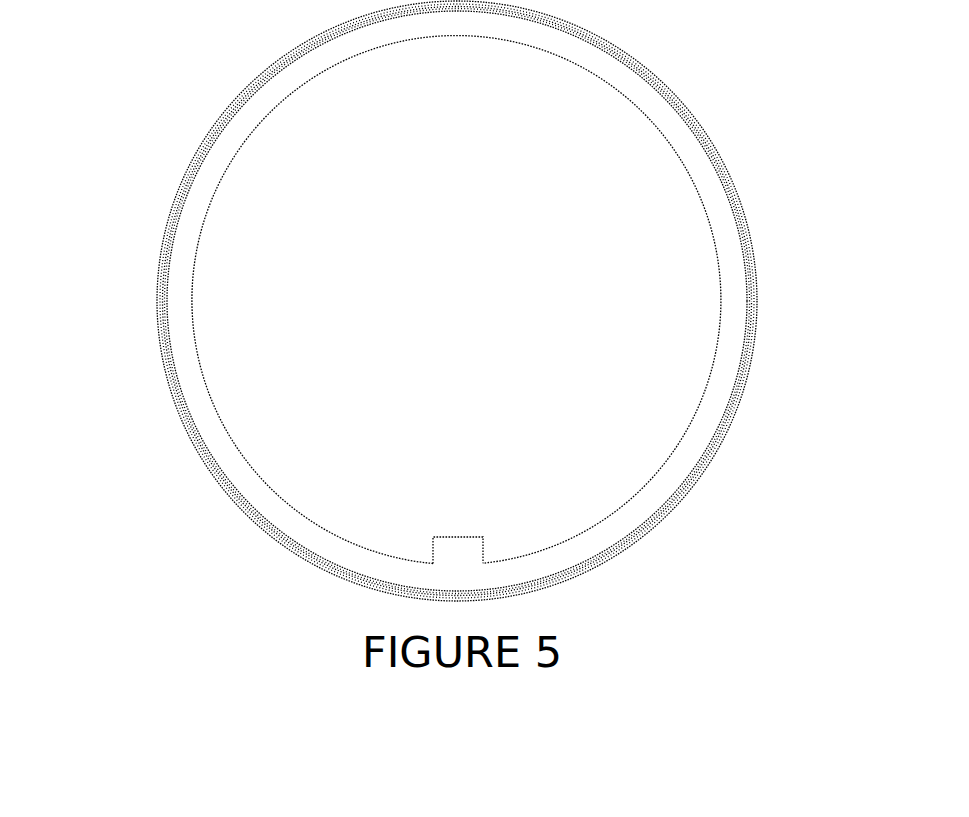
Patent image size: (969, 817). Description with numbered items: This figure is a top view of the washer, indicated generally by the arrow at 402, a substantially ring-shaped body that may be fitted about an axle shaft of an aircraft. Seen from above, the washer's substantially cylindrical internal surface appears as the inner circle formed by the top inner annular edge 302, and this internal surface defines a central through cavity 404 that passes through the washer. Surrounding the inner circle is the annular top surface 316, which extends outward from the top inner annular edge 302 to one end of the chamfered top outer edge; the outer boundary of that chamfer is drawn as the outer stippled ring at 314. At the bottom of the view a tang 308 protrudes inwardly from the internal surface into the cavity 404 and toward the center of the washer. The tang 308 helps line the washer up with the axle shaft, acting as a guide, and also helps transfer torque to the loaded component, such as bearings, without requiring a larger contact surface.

The substrate support assembly 402 is at (170, 131).
The through cavity 404 is at (472, 317).
The top inner annular edge 302 is at (663, 135).
The tang 308 is at (459, 552).
The edge ring 314 is at (747, 382).
The top surface 316 is at (720, 212).